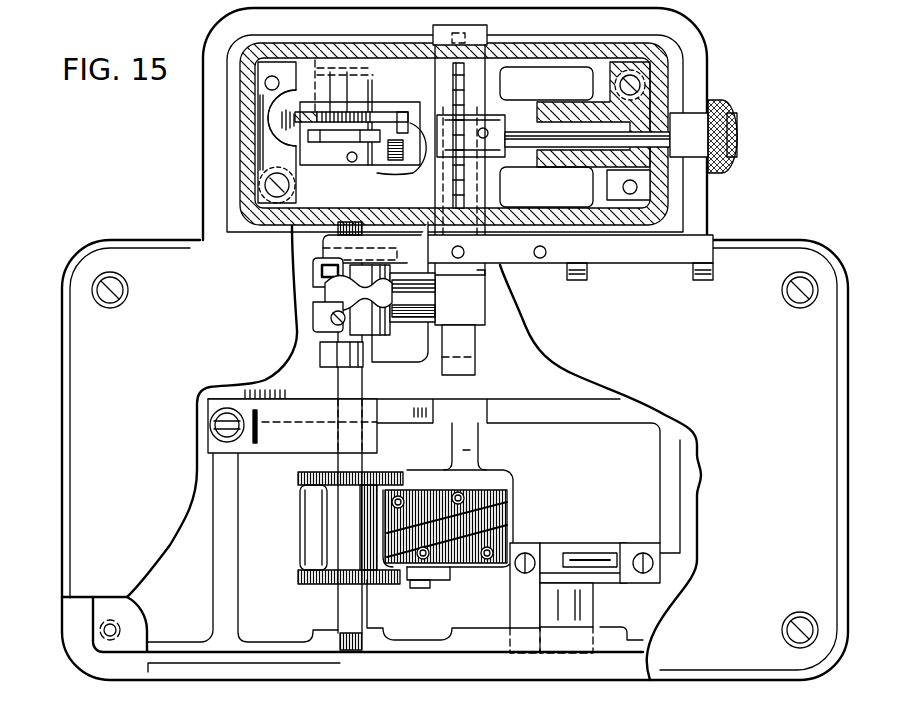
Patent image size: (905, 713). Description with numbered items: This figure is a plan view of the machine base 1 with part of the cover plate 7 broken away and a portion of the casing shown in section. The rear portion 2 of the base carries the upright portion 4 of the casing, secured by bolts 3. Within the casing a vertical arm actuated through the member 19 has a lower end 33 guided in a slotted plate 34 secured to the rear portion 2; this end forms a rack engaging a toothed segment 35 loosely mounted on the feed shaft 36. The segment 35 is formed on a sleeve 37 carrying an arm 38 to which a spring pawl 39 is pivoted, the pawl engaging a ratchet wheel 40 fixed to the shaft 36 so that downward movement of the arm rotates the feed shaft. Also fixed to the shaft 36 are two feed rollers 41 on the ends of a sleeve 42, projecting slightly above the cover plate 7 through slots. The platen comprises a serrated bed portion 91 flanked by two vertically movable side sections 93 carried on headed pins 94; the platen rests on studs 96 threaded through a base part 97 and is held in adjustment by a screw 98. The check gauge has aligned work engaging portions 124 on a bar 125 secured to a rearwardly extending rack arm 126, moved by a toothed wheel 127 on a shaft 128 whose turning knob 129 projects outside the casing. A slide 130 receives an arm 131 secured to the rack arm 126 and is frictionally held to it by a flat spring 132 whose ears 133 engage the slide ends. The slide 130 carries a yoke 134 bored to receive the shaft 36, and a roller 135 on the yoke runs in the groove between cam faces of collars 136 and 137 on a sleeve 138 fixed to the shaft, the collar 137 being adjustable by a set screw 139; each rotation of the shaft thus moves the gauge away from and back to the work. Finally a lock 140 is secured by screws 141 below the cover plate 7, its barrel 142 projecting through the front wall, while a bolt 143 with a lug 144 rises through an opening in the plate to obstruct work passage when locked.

The machine base 1 is at (480, 673).
The rear portion 2 is at (700, 70).
The bolts 3 is at (650, 77).
The upright portion 4 is at (250, 117).
The cover plate 7 is at (147, 240).
The member 19 is at (333, 296).
The lower end 33 is at (318, 112).
The slotted plate 34 is at (273, 125).
The toothed segment 35 is at (345, 112).
The feed shaft 36 is at (347, 607).
The sleeve 37 is at (363, 117).
The arm 38 is at (455, 187).
The spring pawl 39 is at (384, 150).
The ratchet wheel 40 is at (323, 142).
The feed rollers 41 is at (303, 487).
The sleeve 42 is at (272, 545).
The bed portion 91 is at (507, 512).
The side sections 93 is at (497, 495).
The headed pins 94 is at (405, 493).
The studs 96 is at (455, 492).
The base part 97 is at (503, 480).
The screw 98 is at (410, 575).
The work engaging portions 124 is at (693, 278).
The bar 125 is at (700, 240).
The arm 126 is at (480, 80).
The toothed wheel 127 is at (463, 173).
The shaft 128 is at (590, 140).
The turning knob 129 is at (724, 172).
The slide 130 is at (485, 302).
The arm 131 is at (477, 367).
The flat spring 132 is at (535, 348).
The ears 133 is at (485, 322).
The yoke 134 is at (420, 362).
The roller 135 is at (423, 362).
The collar 136 is at (313, 265).
The collar 137 is at (317, 317).
The sleeve 138 is at (330, 292).
The set screw 139 is at (330, 322).
The lock 140 is at (613, 540).
The screws 141 is at (653, 563).
The barrel 142 is at (593, 605).
The bolt 143 is at (583, 565).
The lug 144 is at (553, 567).